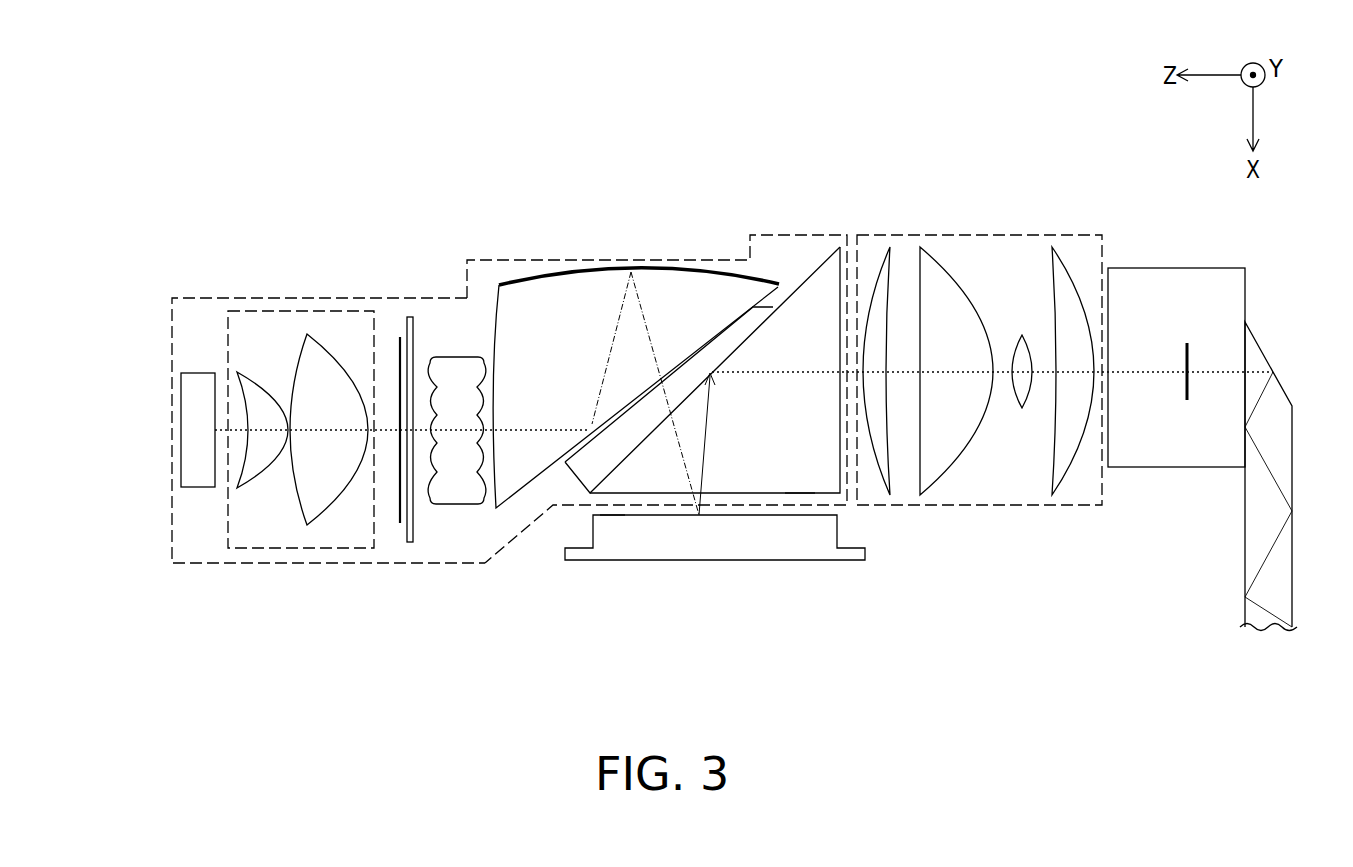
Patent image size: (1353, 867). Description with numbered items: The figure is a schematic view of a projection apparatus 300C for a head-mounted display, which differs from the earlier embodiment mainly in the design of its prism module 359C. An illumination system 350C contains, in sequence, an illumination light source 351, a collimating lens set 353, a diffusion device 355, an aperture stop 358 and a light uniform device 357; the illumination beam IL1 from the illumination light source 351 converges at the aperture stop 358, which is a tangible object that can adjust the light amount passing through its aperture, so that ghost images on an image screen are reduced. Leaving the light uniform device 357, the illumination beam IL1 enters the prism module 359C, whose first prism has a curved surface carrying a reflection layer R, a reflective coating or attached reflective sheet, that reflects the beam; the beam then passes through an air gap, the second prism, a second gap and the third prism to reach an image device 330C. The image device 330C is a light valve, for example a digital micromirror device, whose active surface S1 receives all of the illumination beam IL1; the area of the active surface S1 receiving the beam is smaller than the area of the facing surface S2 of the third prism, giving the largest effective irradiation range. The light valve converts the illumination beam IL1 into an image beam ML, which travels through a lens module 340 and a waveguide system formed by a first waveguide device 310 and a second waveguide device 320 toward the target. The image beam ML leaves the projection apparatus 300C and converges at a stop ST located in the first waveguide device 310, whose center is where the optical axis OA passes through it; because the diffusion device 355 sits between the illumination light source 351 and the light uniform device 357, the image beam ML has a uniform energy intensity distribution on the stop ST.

The projection apparatus 300C is at (1013, 605).
The first waveguide device 310 is at (1176, 267).
The second waveguide device 320 is at (1240, 535).
The image device 330C is at (753, 562).
The lens module 340 is at (990, 235).
The illumination system 350C is at (285, 297).
The illumination light source 351 is at (200, 488).
The collimating lens set 353 is at (283, 550).
The diffusion device 355 is at (400, 523).
The light uniform device 357 is at (447, 357).
The aperture stop 358 is at (410, 317).
The prism module 359C is at (720, 38).
The reflection layer R is at (590, 272).
The illumination beam IL1 is at (423, 430).
The image beam ML is at (705, 448).
The active surface S1 is at (623, 519).
The surface of the third prism S2 is at (805, 506).
The optical axis OA is at (1152, 372).
The stop ST is at (1169, 353).